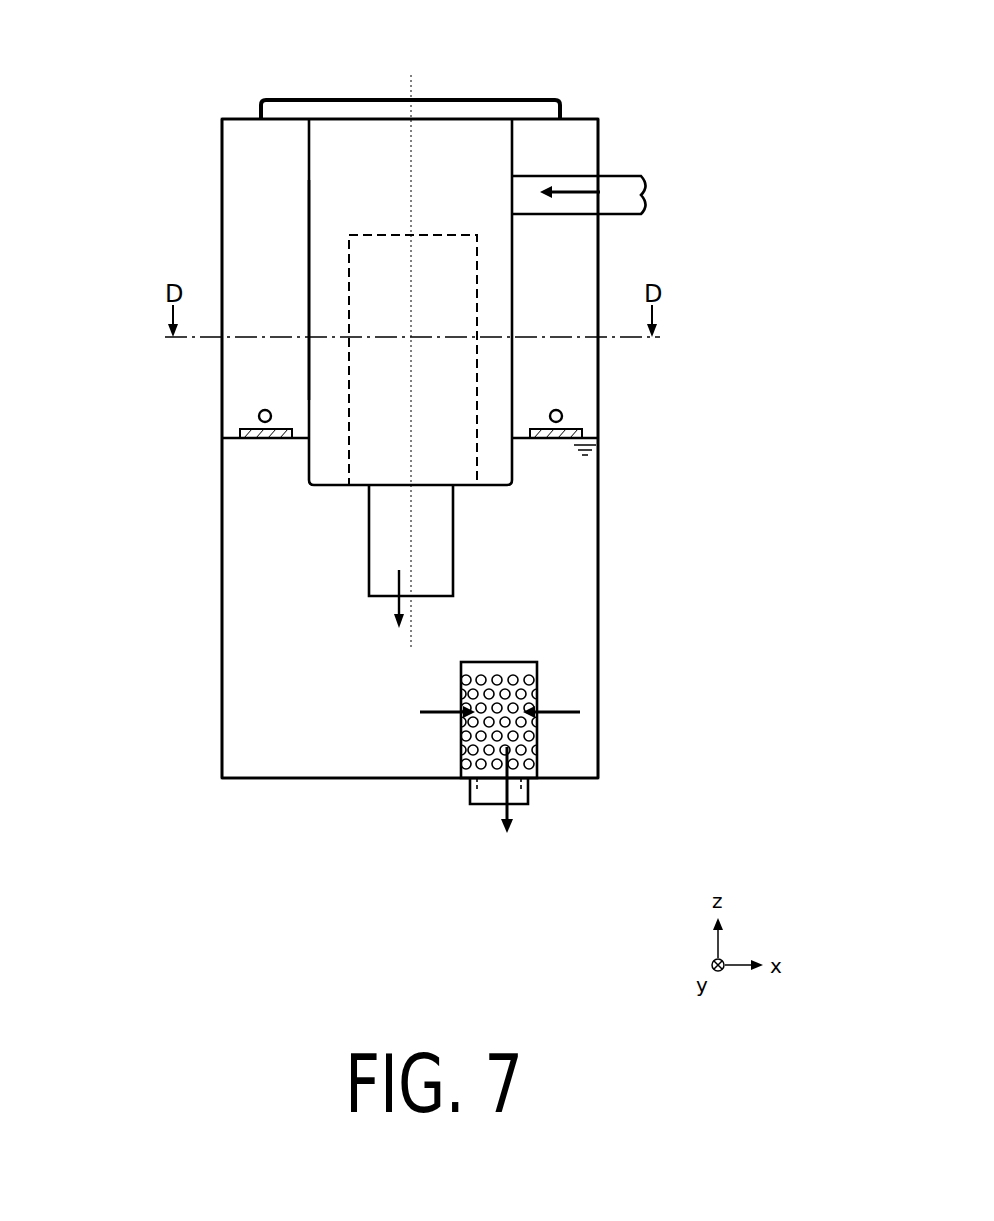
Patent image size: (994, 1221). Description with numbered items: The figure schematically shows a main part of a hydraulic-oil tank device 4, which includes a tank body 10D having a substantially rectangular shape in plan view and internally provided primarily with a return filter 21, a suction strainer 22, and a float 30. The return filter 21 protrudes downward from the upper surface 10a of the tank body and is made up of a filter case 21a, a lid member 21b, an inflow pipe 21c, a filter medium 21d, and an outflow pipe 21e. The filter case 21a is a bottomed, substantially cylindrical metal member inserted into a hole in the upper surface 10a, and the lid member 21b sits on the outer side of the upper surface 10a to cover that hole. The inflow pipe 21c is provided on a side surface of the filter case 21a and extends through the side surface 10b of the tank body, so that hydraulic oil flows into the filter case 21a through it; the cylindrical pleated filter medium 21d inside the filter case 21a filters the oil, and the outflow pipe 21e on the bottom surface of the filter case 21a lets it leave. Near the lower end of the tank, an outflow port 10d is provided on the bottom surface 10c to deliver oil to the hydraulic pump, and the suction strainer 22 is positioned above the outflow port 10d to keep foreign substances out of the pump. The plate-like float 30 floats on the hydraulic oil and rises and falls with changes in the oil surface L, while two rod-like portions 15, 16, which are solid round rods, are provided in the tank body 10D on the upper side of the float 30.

The hydraulic-oil tank device 4 is at (678, 18).
The upper surface 10a is at (587, 116).
The side surface 10b is at (600, 246).
The bottom surface 10c is at (587, 780).
The tank body 10D is at (606, 496).
The outflow port 10d is at (520, 792).
The return filter 21 is at (300, 165).
The filter case 21a is at (309, 272).
The lid member 21b is at (284, 98).
The inflow pipe 21c is at (616, 176).
The filter medium 21d is at (349, 446).
The outflow pipe 21e is at (369, 555).
The rod-like portion 15 is at (259, 413).
The rod-like portion 16 is at (562, 413).
The float 30 is at (240, 431).
The oil surface L is at (583, 438).
The suction strainer 22 is at (548, 685).